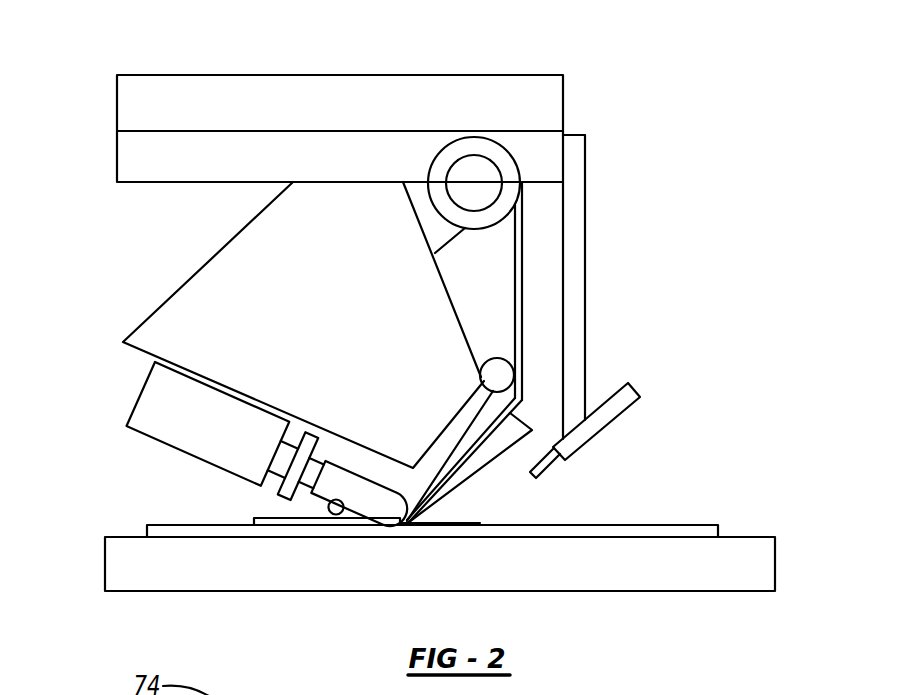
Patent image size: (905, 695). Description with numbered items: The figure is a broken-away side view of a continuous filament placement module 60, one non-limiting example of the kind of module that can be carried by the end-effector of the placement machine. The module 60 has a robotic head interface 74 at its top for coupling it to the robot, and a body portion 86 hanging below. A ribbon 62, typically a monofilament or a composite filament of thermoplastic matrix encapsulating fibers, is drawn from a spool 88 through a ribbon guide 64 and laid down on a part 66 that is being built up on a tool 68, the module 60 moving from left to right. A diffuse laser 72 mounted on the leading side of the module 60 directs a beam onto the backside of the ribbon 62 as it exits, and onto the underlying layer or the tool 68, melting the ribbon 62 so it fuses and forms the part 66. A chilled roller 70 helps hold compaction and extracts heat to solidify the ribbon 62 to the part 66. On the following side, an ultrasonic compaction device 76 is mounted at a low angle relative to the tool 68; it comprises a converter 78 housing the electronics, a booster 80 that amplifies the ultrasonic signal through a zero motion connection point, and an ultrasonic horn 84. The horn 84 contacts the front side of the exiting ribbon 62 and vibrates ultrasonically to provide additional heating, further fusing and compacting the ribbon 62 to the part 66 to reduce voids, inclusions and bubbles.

The continuous filament placement module 60 is at (742, 143).
The ribbon 62 is at (523, 262).
The ribbon guide 64 is at (472, 470).
The part 66 is at (702, 530).
The tool 68 is at (743, 572).
The chilled roller 70 is at (337, 518).
The diffuse laser 72 is at (624, 399).
The robotic head interface 74 is at (174, 90).
The ultrasonic compaction device 76 is at (178, 468).
The converter 78 is at (184, 407).
The booster 80 is at (284, 492).
The ultrasonic horn 84 is at (388, 505).
The body portion 86 is at (199, 293).
The spool 88 is at (505, 166).